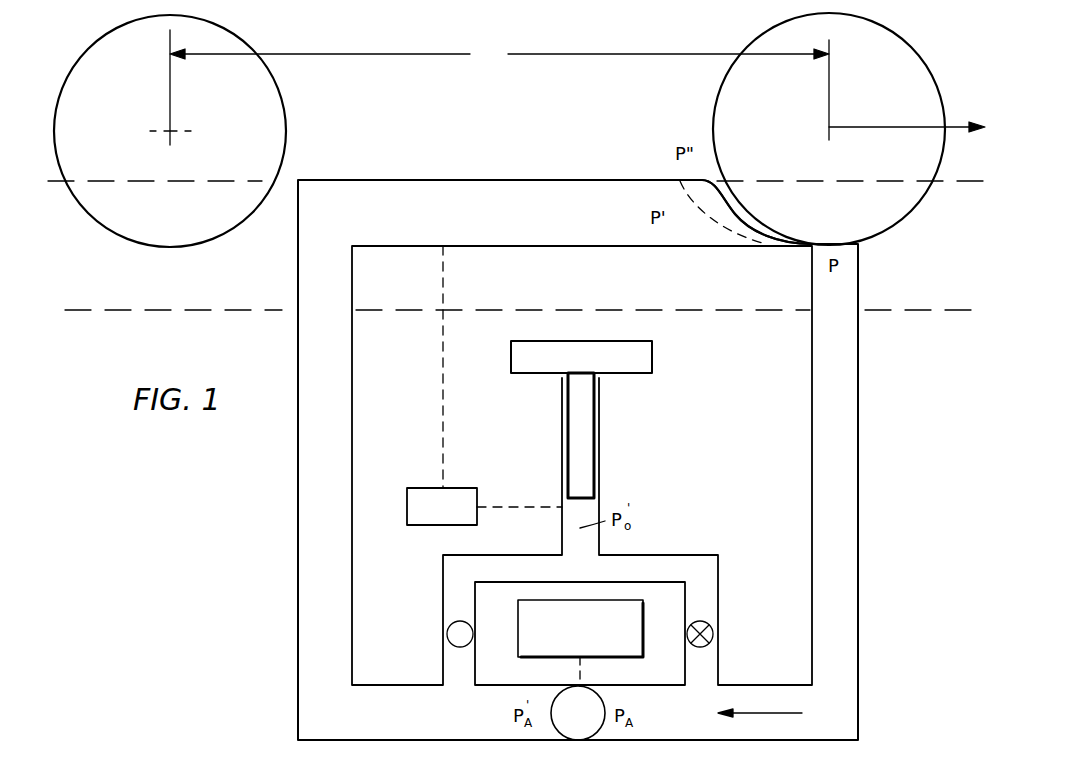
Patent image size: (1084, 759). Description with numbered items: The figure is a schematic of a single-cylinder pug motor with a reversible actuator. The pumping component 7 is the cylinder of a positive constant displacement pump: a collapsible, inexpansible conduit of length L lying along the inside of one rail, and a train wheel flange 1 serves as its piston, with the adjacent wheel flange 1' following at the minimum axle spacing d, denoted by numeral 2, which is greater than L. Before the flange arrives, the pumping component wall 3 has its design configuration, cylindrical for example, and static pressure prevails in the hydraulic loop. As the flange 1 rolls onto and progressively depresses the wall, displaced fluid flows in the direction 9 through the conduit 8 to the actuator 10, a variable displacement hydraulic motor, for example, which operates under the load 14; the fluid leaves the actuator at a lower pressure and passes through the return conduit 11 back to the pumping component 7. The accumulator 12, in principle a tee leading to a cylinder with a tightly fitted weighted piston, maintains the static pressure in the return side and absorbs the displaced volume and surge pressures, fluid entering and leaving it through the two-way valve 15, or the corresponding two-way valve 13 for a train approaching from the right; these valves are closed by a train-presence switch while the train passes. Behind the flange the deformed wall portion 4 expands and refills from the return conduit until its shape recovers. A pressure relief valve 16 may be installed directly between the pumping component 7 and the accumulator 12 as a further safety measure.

The wheel flange 1 is at (849, 129).
The wheel flange 1' is at (170, 131).
The minimum distance between adjacent axles 2 is at (500, 47).
The pumping component wall 3 is at (300, 212).
The deformed portion of pumping component wall 4 is at (732, 212).
The pumping component 7 is at (591, 229).
The conduit 8 is at (838, 435).
The direction of flow 9 is at (752, 714).
The actuator 10 is at (589, 725).
The conduit 11 is at (336, 437).
The accumulator 12 is at (585, 413).
The two-way valve 13 is at (713, 622).
The load 14 is at (646, 637).
The two-way valve 15 is at (452, 644).
The pressure relief valve 16 is at (455, 520).